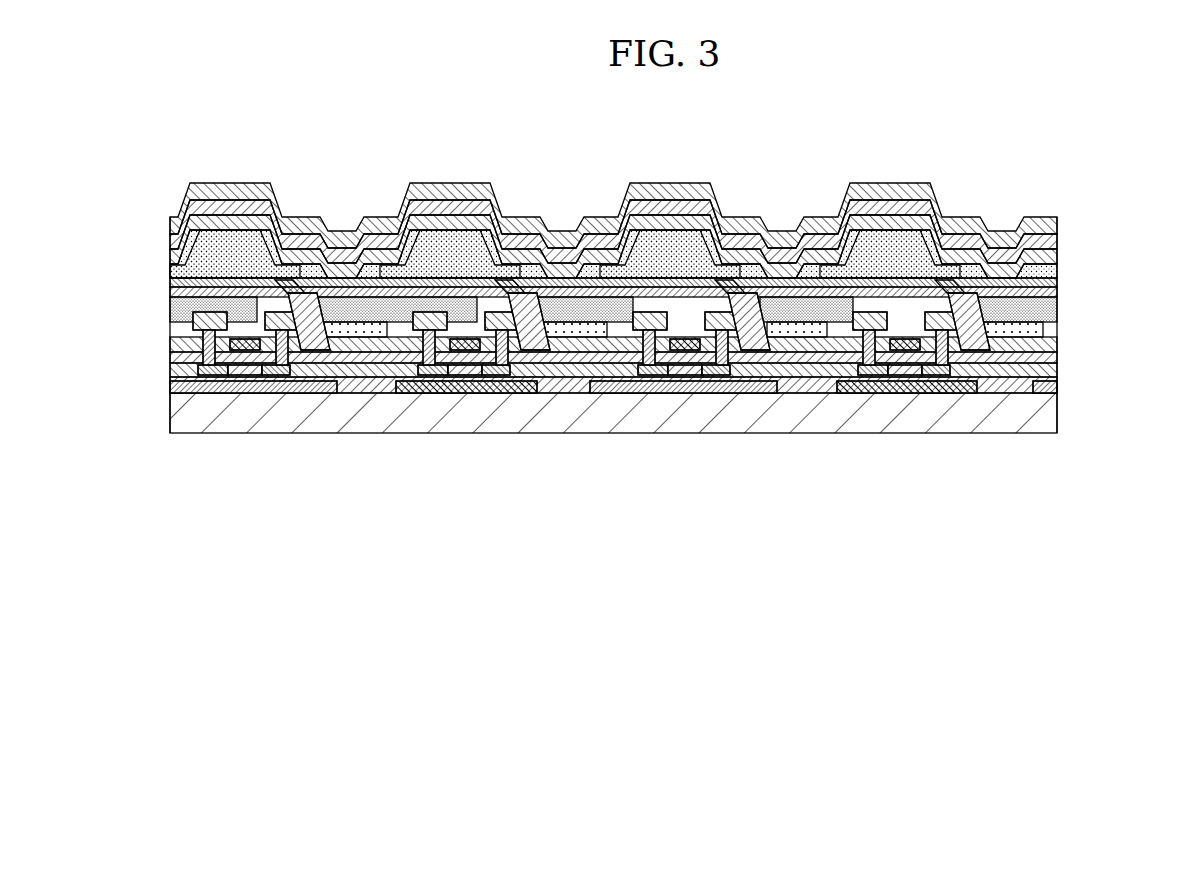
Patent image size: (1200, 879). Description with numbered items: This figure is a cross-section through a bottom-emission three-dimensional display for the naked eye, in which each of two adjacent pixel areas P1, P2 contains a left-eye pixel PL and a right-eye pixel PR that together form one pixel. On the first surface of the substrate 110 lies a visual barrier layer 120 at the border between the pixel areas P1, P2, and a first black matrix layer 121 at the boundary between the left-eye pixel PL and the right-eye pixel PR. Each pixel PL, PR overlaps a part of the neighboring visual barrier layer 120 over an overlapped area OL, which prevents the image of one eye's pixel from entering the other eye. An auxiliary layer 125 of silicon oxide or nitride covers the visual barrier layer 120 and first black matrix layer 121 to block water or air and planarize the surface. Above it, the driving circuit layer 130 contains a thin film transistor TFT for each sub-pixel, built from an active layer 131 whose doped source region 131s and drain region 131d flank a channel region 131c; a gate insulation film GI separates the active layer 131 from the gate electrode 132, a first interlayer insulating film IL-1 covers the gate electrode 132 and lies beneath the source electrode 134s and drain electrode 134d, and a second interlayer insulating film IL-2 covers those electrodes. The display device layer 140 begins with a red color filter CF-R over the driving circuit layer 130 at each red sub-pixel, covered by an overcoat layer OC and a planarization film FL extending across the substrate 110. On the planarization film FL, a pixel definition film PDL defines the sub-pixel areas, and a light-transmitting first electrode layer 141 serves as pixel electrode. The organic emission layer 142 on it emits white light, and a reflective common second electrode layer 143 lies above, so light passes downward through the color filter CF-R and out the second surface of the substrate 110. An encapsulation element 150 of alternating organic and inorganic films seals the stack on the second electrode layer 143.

The substrate 110 is at (1043, 418).
The auxiliary layer 125 is at (1057, 385).
The visual barrier layer 120 is at (184, 394).
The first black matrix layer 121 is at (462, 394).
The driving circuit layer 130 is at (682, 347).
The gate insulation film GI is at (1057, 370).
The first interlayer insulating film IL-1 is at (1057, 358).
The second interlayer insulating film IL-2 is at (1057, 345).
The red color filter CF-R is at (1057, 310).
The overcoat layer OC is at (1057, 293).
The planarization film FL is at (1057, 283).
The display device layer 140 is at (682, 275).
The first electrode layer 141 is at (1057, 270).
The organic emission layer 142 is at (1057, 256).
The second electrode layer 143 is at (1057, 240).
The encapsulation element 150 is at (1055, 221).
The pixel definition film PDL is at (887, 240).
The left-eye pixel PL is at (797, 308).
The right-eye pixel PR is at (1012, 308).
The thin film transistor TFT is at (588, 335).
The active layer 131 is at (568, 448).
The source region 131s is at (210, 376).
The channel region 131c is at (240, 376).
The drain region 131d is at (275, 376).
The gate electrode 132 is at (252, 339).
The source electrode 134s is at (208, 330).
The drain electrode 134d is at (282, 330).
The overlapped area OL is at (1048, 380).
The pixel area P1 is at (315, 380).
The pixel area P2 is at (757, 380).